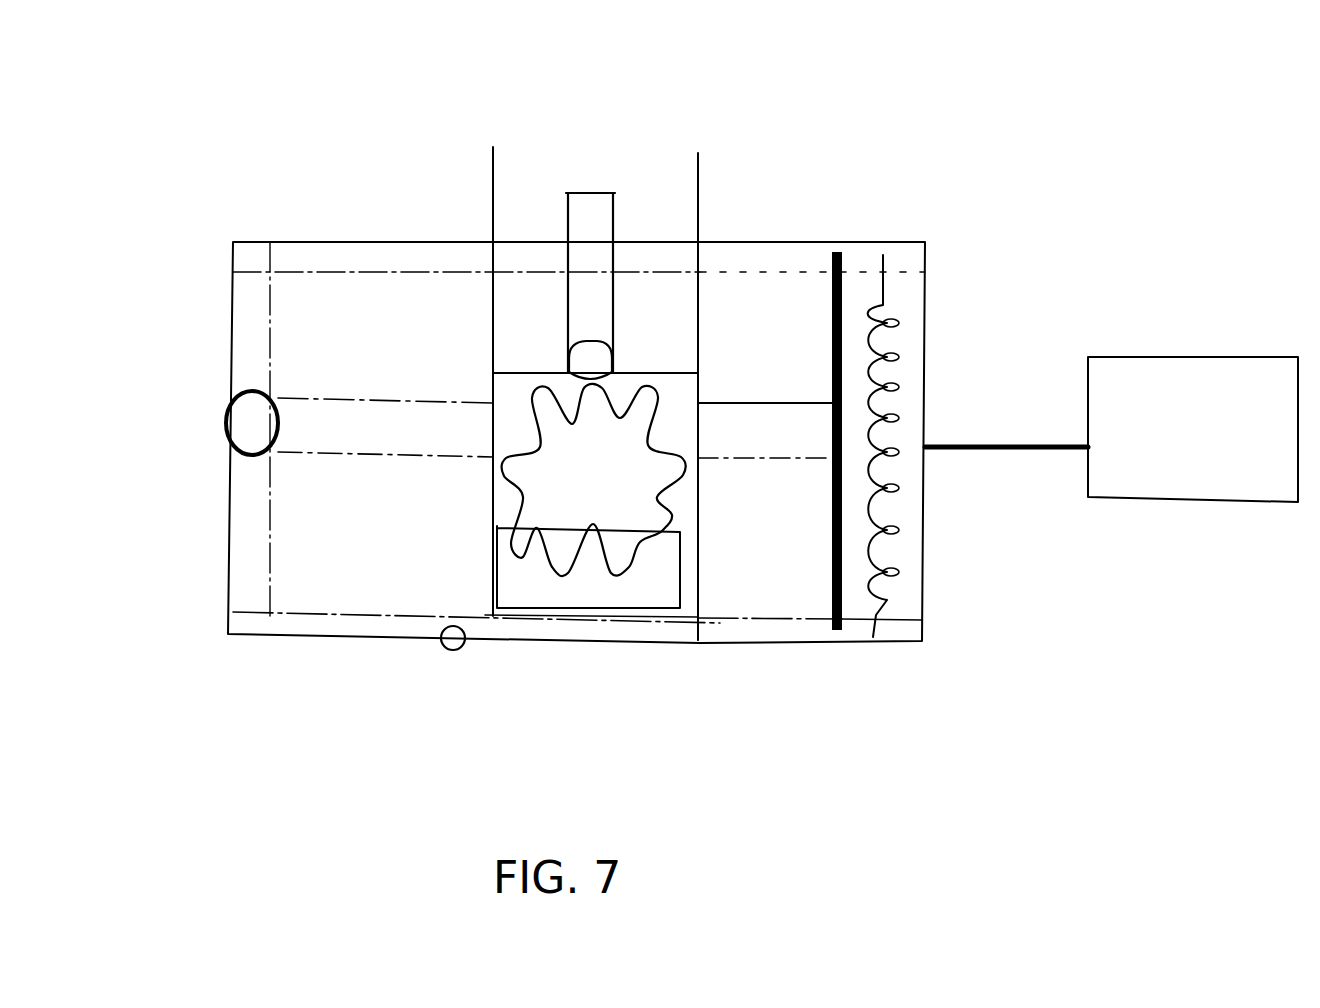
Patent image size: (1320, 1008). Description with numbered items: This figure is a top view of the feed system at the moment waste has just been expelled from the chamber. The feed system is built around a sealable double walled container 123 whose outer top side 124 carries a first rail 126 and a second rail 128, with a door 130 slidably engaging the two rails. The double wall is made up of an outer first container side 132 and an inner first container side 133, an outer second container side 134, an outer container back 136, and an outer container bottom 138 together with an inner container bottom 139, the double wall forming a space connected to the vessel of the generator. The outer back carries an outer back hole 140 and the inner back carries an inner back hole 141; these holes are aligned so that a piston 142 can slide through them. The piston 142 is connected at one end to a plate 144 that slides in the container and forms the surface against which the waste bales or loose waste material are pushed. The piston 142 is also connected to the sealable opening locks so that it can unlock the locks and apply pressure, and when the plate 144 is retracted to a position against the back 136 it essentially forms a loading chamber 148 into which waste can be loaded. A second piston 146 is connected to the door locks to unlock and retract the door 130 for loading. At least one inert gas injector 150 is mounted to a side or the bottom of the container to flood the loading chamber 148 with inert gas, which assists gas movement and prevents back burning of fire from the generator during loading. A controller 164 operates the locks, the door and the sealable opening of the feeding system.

The sealable double walled container 123 is at (296, 218).
The outer top side 124 is at (347, 240).
The first rail 126 is at (497, 165).
The second rail 128 is at (362, 315).
The door 130 is at (633, 487).
The outer first container side 132 is at (847, 243).
The inner first container side 133 is at (748, 288).
The outer second container side 134 is at (745, 643).
The outer container back 136 is at (772, 620).
The outer container bottom 138 is at (413, 638).
The inner container bottom 139 is at (342, 613).
The outer back hole 140 is at (228, 423).
The inner back hole 141 is at (247, 342).
The piston 142 is at (310, 453).
The plate 144 is at (835, 625).
The second piston 146 is at (590, 200).
The loading chamber 148 is at (541, 585).
The inert gas injector 150 is at (453, 652).
The controller 164 is at (1170, 352).